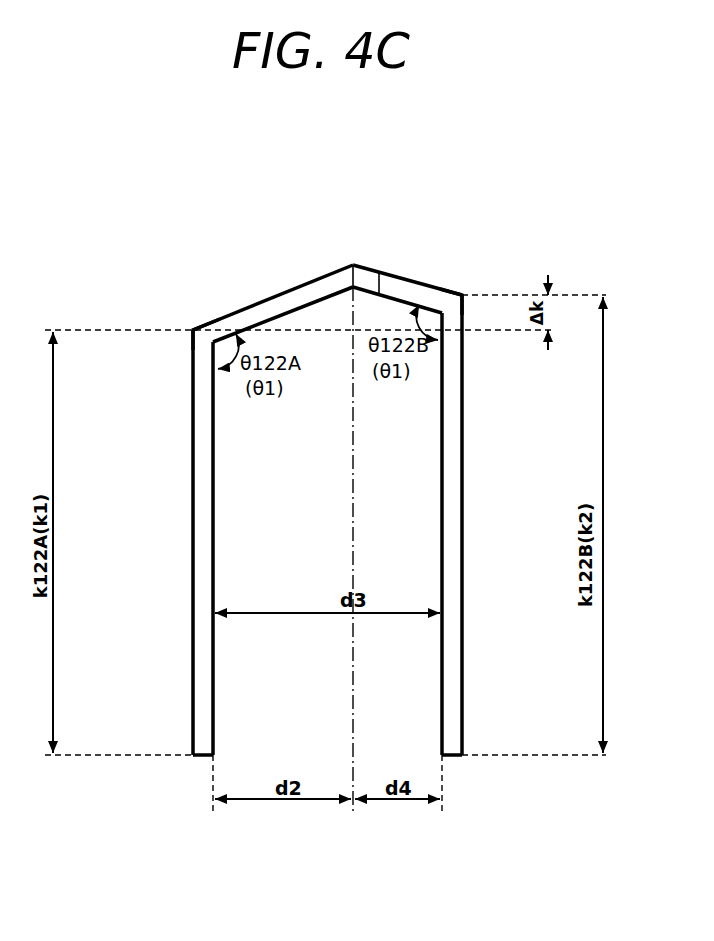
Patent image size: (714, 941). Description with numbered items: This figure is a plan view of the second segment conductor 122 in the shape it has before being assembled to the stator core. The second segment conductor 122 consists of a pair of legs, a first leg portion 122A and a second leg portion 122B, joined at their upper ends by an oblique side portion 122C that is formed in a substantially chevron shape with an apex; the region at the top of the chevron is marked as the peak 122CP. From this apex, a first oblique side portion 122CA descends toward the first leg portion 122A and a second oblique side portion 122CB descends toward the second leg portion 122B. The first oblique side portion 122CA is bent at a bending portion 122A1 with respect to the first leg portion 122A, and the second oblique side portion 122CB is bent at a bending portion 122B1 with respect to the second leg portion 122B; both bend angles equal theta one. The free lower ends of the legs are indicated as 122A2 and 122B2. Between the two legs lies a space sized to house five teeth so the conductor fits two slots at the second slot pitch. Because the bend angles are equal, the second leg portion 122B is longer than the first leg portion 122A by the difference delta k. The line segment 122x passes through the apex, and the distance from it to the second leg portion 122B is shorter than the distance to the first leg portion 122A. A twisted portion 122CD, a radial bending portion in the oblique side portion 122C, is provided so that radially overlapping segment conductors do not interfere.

The second segment conductor 122 is at (477, 252).
The first leg portion 122A is at (193, 568).
The bending portion 122A1 is at (193, 330).
The lower end of first leg portion 122A2 is at (193, 750).
The second leg portion 122B is at (442, 487).
The bending portion 122B1 is at (462, 296).
The lower end of second leg portion 122B2 is at (462, 750).
The oblique side portion 122C is at (245, 200).
The first oblique side portion 122CA is at (265, 301).
The second oblique side portion 122CB is at (428, 286).
The peak of connecting portion 122CP is at (353, 265).
The twisted portion 122CD is at (376, 282).
The line segment 122x is at (353, 712).